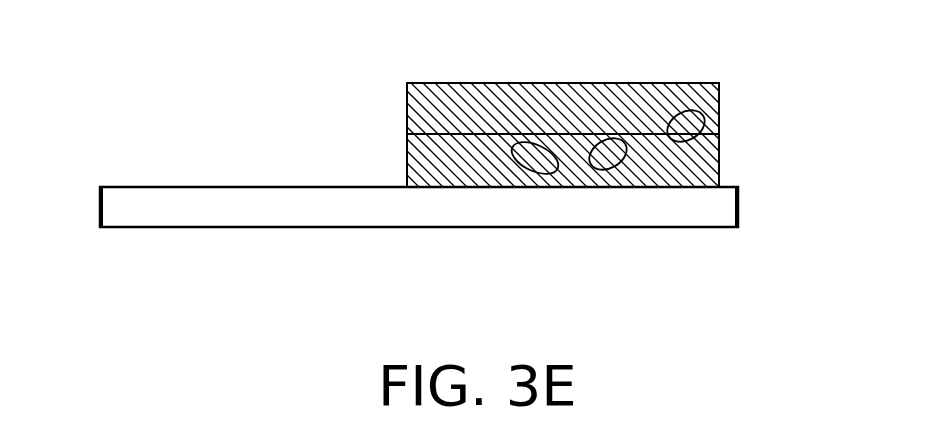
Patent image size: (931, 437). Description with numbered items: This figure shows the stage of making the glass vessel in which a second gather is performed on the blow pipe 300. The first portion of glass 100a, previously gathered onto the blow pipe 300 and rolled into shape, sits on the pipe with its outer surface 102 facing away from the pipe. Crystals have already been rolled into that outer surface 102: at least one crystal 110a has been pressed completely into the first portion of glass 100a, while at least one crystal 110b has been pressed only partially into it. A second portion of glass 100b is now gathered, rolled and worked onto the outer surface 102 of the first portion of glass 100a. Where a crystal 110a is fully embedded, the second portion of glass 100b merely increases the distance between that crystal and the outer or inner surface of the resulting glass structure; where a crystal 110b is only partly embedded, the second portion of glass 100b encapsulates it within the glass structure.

The blow pipe 300 is at (140, 227).
The first portion of glass 100a is at (407, 162).
The second portion of glass 100b is at (407, 117).
The outer surface 102 is at (425, 134).
The crystal pressed completely into the first portion of glass 110a is at (520, 160).
The crystal pressed partially into the first portion of glass 110b is at (697, 112).